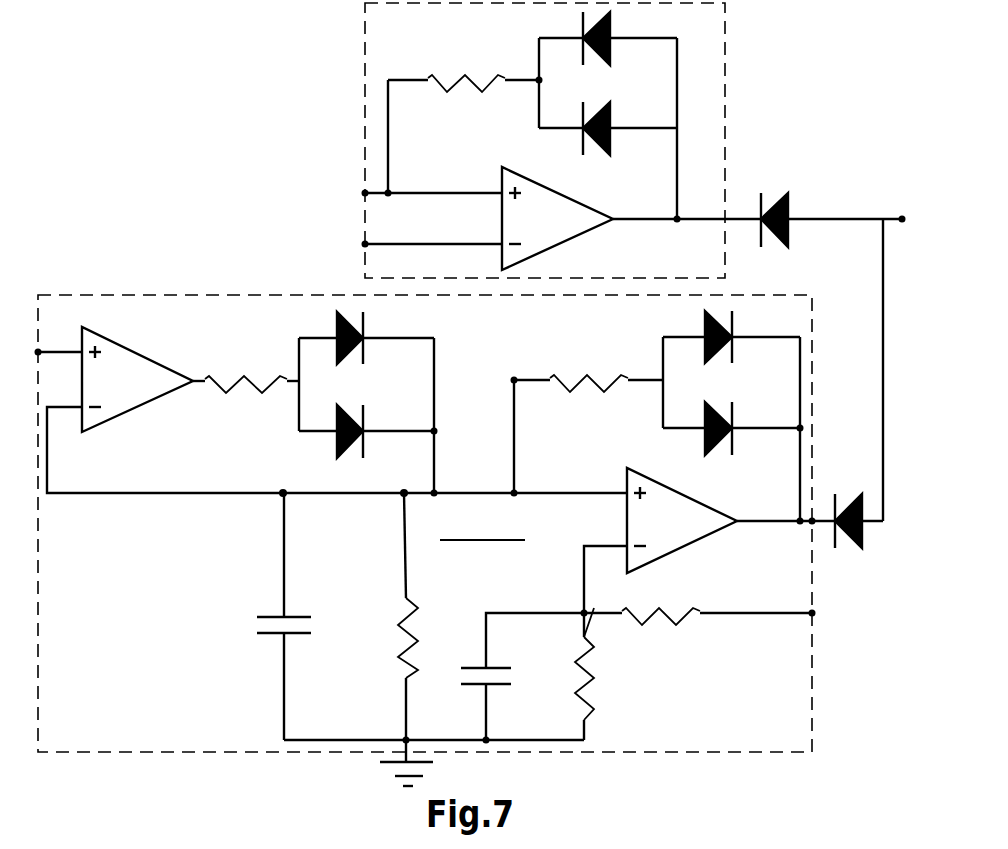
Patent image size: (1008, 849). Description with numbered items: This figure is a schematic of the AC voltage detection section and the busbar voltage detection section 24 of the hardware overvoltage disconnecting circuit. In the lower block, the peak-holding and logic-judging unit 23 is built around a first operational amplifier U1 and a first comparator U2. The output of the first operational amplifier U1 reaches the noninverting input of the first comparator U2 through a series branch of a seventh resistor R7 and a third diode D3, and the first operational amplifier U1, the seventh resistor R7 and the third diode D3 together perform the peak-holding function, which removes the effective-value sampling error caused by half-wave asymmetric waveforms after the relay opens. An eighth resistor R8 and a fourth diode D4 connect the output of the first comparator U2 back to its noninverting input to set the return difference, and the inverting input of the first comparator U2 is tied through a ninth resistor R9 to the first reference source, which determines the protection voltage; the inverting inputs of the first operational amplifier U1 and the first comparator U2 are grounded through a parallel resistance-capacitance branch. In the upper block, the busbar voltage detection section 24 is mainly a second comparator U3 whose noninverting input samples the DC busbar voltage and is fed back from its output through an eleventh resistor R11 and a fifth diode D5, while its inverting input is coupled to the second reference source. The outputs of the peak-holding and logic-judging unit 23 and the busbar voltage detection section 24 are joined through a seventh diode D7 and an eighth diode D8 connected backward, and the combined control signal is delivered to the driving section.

The peak-holding and logic-judging unit 23 is at (643, 720).
The busbar voltage detection section 24 is at (400, 48).
The eleventh resistor R11 is at (463, 67).
The fifth diode D5 is at (608, 115).
The second comparator U3 is at (557, 218).
The seventh diode D7 is at (776, 204).
The first operational amplifier U1 is at (137, 378).
The seventh resistor R7 is at (246, 367).
The third diode D3 is at (366, 402).
The eighth resistor R8 is at (588, 366).
The fourth diode D4 is at (731, 416).
The first comparator U2 is at (683, 520).
The eighth diode D8 is at (849, 503).
The ninth resistor R9 is at (698, 630).